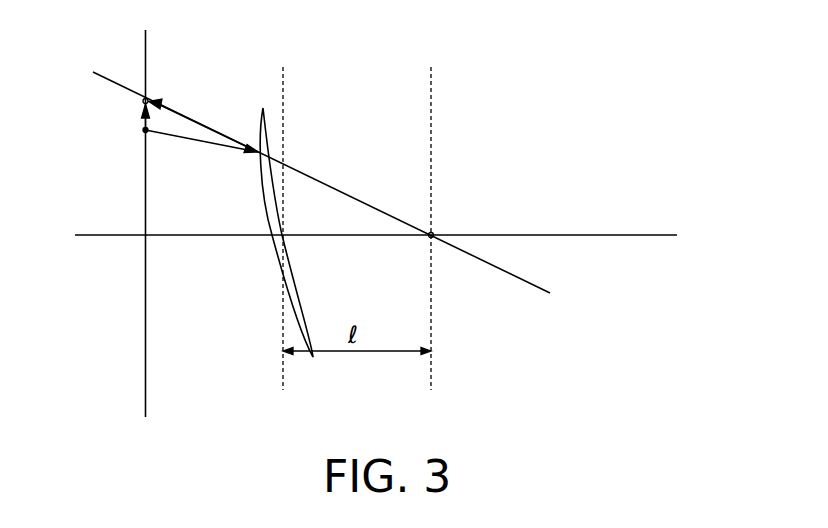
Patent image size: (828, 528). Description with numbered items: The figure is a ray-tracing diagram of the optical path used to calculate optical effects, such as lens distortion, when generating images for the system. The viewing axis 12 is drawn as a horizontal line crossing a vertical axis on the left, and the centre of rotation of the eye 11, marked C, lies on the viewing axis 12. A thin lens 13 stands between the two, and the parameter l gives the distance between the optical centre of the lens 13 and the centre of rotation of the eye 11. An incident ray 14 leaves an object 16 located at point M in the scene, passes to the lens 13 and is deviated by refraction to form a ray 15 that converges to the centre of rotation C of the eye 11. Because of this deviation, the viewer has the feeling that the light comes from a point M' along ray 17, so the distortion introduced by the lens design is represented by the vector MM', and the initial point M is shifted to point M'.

The centre of rotation of the eye 11 is at (433, 238).
The viewing axis 12 is at (622, 233).
The lens 13 is at (268, 125).
The incident ray 14 is at (217, 148).
The ray 15 is at (362, 198).
The object 16 is at (143, 128).
The ray 17 is at (212, 128).